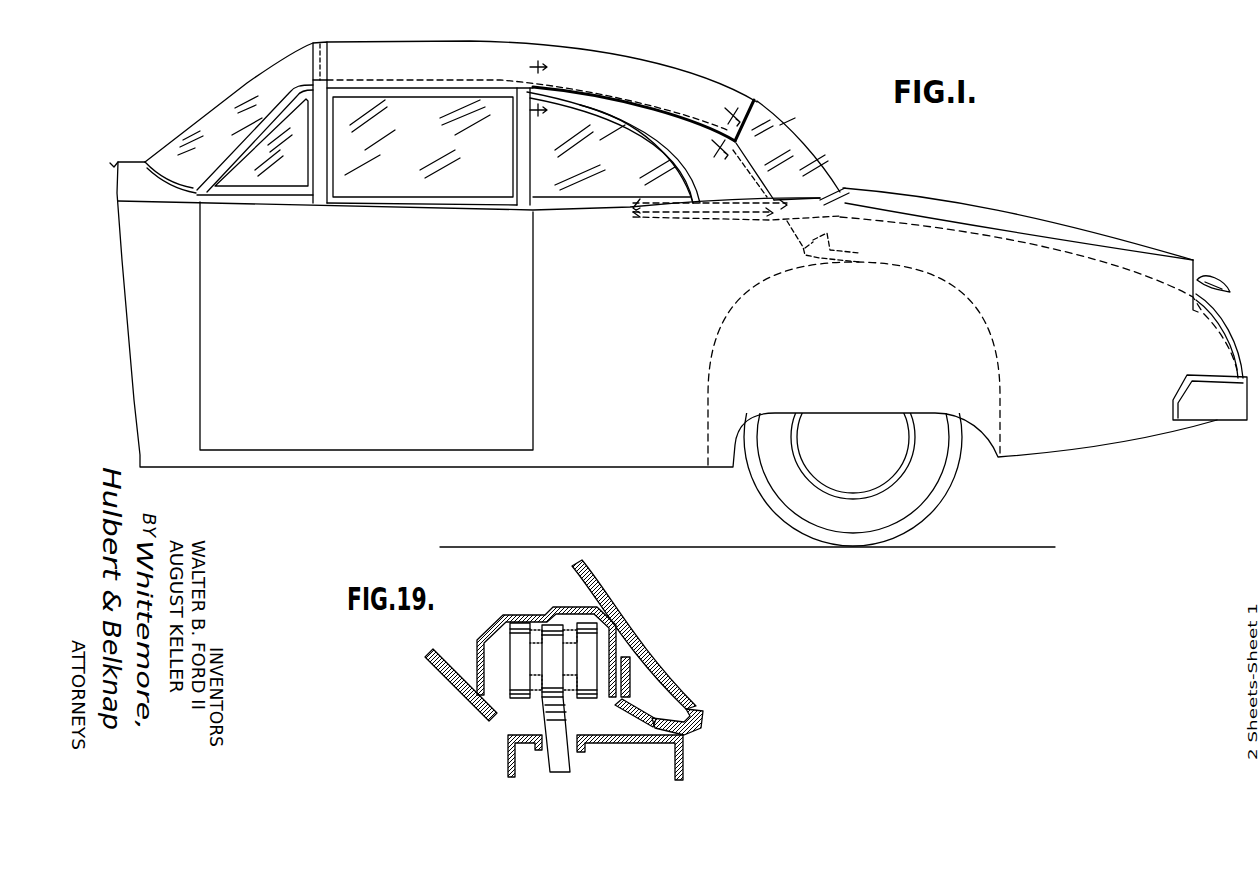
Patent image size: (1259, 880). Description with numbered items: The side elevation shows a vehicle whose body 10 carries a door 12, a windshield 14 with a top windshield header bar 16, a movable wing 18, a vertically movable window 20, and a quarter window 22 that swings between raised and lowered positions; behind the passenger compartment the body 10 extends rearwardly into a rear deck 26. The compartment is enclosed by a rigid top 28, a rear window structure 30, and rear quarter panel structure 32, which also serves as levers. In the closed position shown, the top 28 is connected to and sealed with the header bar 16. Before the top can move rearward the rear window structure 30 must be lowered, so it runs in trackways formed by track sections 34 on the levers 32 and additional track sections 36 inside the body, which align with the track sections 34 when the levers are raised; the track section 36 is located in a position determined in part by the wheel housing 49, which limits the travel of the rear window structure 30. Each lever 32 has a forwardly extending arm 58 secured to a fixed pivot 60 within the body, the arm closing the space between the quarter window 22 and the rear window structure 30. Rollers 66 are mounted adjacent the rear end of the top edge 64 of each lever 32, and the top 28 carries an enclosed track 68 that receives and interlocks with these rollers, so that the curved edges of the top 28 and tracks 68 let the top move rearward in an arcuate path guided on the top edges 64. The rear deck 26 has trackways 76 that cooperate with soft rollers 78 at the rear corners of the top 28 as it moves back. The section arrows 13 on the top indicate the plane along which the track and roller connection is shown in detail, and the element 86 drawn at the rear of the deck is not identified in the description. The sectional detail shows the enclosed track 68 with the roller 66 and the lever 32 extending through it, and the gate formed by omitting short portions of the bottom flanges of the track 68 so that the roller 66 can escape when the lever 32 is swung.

In FIG. 1, the body 10 is at (646, 464).
In FIG. 1, the door 12 is at (434, 399).
In FIG. 1, the section line 13- 13 is at (551, 90).
In FIG. 1, the windshield 14 is at (218, 107).
In FIG. 1, the top windshield header bar 16 is at (313, 41).
In FIG. 1, the movable wing 18 is at (297, 177).
In FIG. 1, the vertically movable window 20 is at (453, 187).
In FIG. 1, the quarter window 22 is at (573, 190).
In FIG. 1, the rear deck 26 is at (1037, 213).
In FIG. 1, the top 28 is at (467, 52).
In FIG. 1, the rear window structure 30 is at (793, 137).
In FIG. 1, the rear quarter panel structure 32 is at (670, 153).
In FIG. 19, the rear quarter panel structure 32 is at (563, 762).
In FIG. 1, the track sections 34 is at (750, 177).
In FIG. 1, the track sections 36 is at (810, 263).
In FIG. 1, the wheel housing 49 is at (997, 381).
In FIG. 1, the forwardly extending arms 58 is at (687, 223).
In FIG. 1, the fixed pivots 60 is at (633, 227).
In FIG. 1, the top edge 64 is at (647, 100).
In FIG. 19, the top edge 64 is at (557, 627).
In FIG. 1, the rollers 66 is at (720, 122).
In FIG. 19, the rollers 66 is at (517, 622).
In FIG. 19, the enclosed track 68 is at (478, 647).
In FIG. 1, the trackways 76 is at (948, 228).
In FIG. 1, the rollers 78 is at (760, 123).
In FIG. 1, the bumper guard 86 is at (1212, 277).